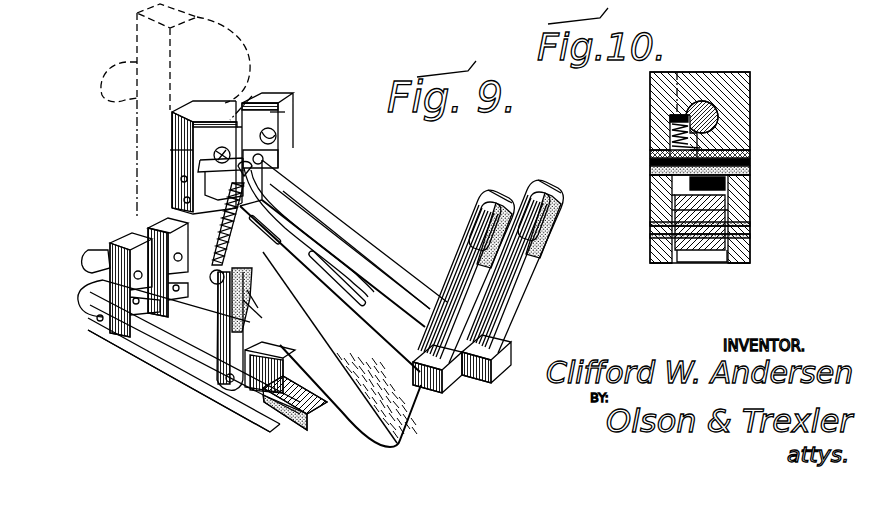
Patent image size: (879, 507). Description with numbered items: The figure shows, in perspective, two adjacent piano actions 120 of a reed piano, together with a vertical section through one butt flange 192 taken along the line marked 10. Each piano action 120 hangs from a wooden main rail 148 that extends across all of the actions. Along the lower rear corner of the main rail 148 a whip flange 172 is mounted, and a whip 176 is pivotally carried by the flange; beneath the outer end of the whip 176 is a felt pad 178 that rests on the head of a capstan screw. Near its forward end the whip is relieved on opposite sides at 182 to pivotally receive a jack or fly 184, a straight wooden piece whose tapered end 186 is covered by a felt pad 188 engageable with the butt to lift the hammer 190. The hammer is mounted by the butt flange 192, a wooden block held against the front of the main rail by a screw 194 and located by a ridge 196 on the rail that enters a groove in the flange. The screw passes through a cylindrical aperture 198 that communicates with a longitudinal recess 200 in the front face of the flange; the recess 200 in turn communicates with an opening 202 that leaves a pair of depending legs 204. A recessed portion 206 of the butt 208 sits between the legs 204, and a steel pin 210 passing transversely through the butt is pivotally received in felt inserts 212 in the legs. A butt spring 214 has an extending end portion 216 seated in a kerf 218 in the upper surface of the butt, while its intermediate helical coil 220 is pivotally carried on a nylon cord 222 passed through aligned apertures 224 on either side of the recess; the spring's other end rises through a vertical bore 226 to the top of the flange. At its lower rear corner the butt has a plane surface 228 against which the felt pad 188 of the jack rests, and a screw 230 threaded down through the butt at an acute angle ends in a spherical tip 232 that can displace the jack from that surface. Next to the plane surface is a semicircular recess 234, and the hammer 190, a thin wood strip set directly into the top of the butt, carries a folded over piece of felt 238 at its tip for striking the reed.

In FIG. 9, the apparatus 10 is at (227, 77).
In FIG. 9, the piano action 120 is at (208, 387).
In FIG. 9, the main rail 148 is at (137, 65).
In FIG. 9, the whip flange 172 is at (113, 324).
In FIG. 9, the whip 176 is at (160, 343).
In FIG. 9, the felt pad 178 is at (288, 420).
In FIG. 9, the relieved portion 182 is at (260, 393).
In FIG. 9, the jack or fly 184 is at (272, 348).
In FIG. 9, the tapered end 186 is at (243, 323).
In FIG. 9, the felt pad 188 is at (248, 300).
In FIG. 9, the hammer 190 is at (457, 312).
In FIG. 9, the butt flange 192 is at (266, 94).
In FIG. 10, the butt flange 192 is at (750, 75).
In FIG. 9, the screw 194 is at (277, 134).
In FIG. 10, the screw 194 is at (702, 100).
In FIG. 9, the ridge 196 is at (177, 112).
In FIG. 9, the cylindrical aperture 198 is at (278, 112).
In FIG. 10, the cylindrical aperture 198 is at (716, 112).
In FIG. 9, the longitudinal recess 200 is at (184, 126).
In FIG. 10, the longitudinal recess 200 is at (672, 135).
In FIG. 9, the opening 202 is at (283, 163).
In FIG. 10, the opening 202 is at (740, 172).
In FIG. 9, the depending legs 204 is at (186, 180).
In FIG. 10, the depending legs 204 is at (740, 264).
In FIG. 9, the recessed portion 206 is at (262, 182).
In FIG. 10, the recessed portion 206 is at (728, 207).
In FIG. 9, the butt 208 is at (413, 300).
In FIG. 10, the steel pin 210 is at (697, 228).
In FIG. 10, the felt inserts 212 is at (740, 228).
In FIG. 9, the butt spring 214 is at (283, 191).
In FIG. 9, the extending end portion 216 is at (363, 247).
In FIG. 9, the kerf 218 is at (378, 290).
In FIG. 9, the helical coil 220 is at (203, 157).
In FIG. 10, the helical coil 220 is at (700, 148).
In FIG. 9, the nylon cord 222 is at (197, 195).
In FIG. 10, the nylon cord 222 is at (740, 158).
In FIG. 10, the aligned apertures 224 is at (650, 153).
In FIG. 9, the vertical bore 226 is at (244, 100).
In FIG. 10, the vertical bore 226 is at (678, 72).
In FIG. 9, the plane surface 228 is at (229, 267).
In FIG. 9, the screw 230 is at (322, 178).
In FIG. 9, the spherical tip 232 is at (220, 347).
In FIG. 9, the semicircular recess 234 is at (250, 292).
In FIG. 9, the folded over piece of felt 238 is at (530, 186).